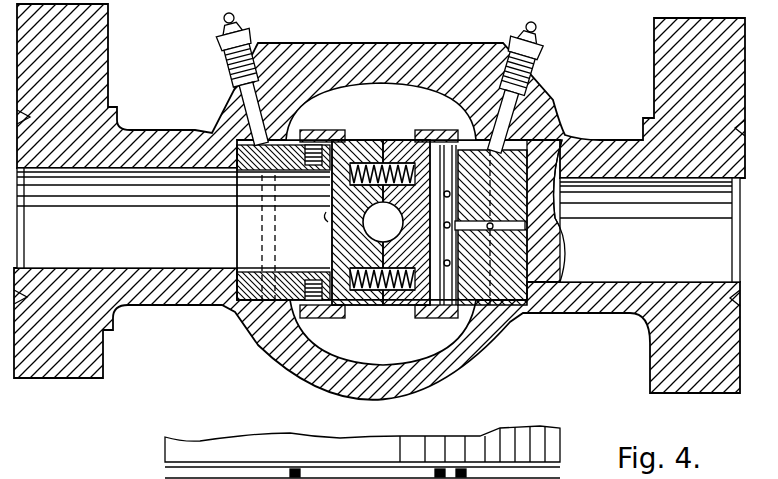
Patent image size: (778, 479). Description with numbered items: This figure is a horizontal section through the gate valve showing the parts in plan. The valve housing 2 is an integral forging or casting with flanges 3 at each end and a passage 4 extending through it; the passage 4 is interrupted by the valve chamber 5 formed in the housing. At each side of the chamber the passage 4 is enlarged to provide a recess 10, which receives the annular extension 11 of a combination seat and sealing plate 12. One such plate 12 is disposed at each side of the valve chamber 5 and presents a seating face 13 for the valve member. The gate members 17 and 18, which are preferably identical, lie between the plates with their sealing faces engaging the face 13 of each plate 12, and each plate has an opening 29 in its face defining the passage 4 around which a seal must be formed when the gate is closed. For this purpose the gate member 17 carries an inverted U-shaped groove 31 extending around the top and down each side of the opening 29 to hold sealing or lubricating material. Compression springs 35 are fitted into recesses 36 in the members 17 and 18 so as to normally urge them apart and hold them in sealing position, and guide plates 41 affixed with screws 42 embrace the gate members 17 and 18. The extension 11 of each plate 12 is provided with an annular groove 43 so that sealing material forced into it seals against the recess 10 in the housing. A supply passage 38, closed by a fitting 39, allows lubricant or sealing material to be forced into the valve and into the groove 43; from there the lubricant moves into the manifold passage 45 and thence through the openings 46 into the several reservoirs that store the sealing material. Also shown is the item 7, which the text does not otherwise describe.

The valve housing 2 is at (168, 308).
The flanges 3 is at (52, 378).
The passage 4 is at (173, 222).
The valve chamber 5 is at (270, 352).
The stem 7 is at (562, 456).
The recess 10 is at (240, 273).
The annular extension 11 is at (247, 285).
The combination seat and sealing plate 12 is at (304, 140).
The seating face 13 is at (381, 222).
The gate member 17 is at (362, 300).
The gate member 18 is at (420, 300).
The opening 29 is at (328, 220).
The inverted U-shaped groove 31 is at (356, 140).
The compression springs 35 is at (384, 298).
The recesses 36 is at (382, 150).
The supply passage 38 is at (258, 104).
The fitting 39 is at (225, 30).
The guide plates 41 is at (424, 142).
The screws 42 is at (284, 352).
The annular groove 43 is at (562, 256).
The manifold passage 45 is at (478, 330).
The openings 46 is at (480, 305).